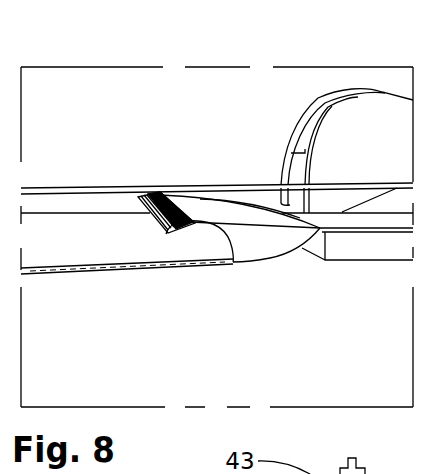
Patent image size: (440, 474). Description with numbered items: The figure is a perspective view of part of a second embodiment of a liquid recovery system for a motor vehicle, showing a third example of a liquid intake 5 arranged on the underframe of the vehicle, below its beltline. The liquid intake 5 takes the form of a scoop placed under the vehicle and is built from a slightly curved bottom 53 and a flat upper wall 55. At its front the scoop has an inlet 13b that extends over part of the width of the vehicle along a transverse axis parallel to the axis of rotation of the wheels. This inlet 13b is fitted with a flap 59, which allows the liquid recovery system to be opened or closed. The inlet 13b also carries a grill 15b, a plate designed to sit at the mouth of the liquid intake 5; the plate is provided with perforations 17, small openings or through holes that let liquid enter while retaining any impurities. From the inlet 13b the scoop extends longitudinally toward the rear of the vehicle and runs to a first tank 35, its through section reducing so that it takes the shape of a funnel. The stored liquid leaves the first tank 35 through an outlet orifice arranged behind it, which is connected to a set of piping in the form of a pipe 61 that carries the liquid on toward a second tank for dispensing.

The liquid intake 5 is at (208, 267).
The inlet 13b is at (143, 195).
The grill 15b is at (157, 189).
The perforations 17 is at (197, 212).
The first tank 35 is at (352, 247).
The bottom 53 is at (272, 262).
The upper wall 55 is at (232, 213).
The flap 59 is at (185, 244).
The pipe 61 is at (253, 178).